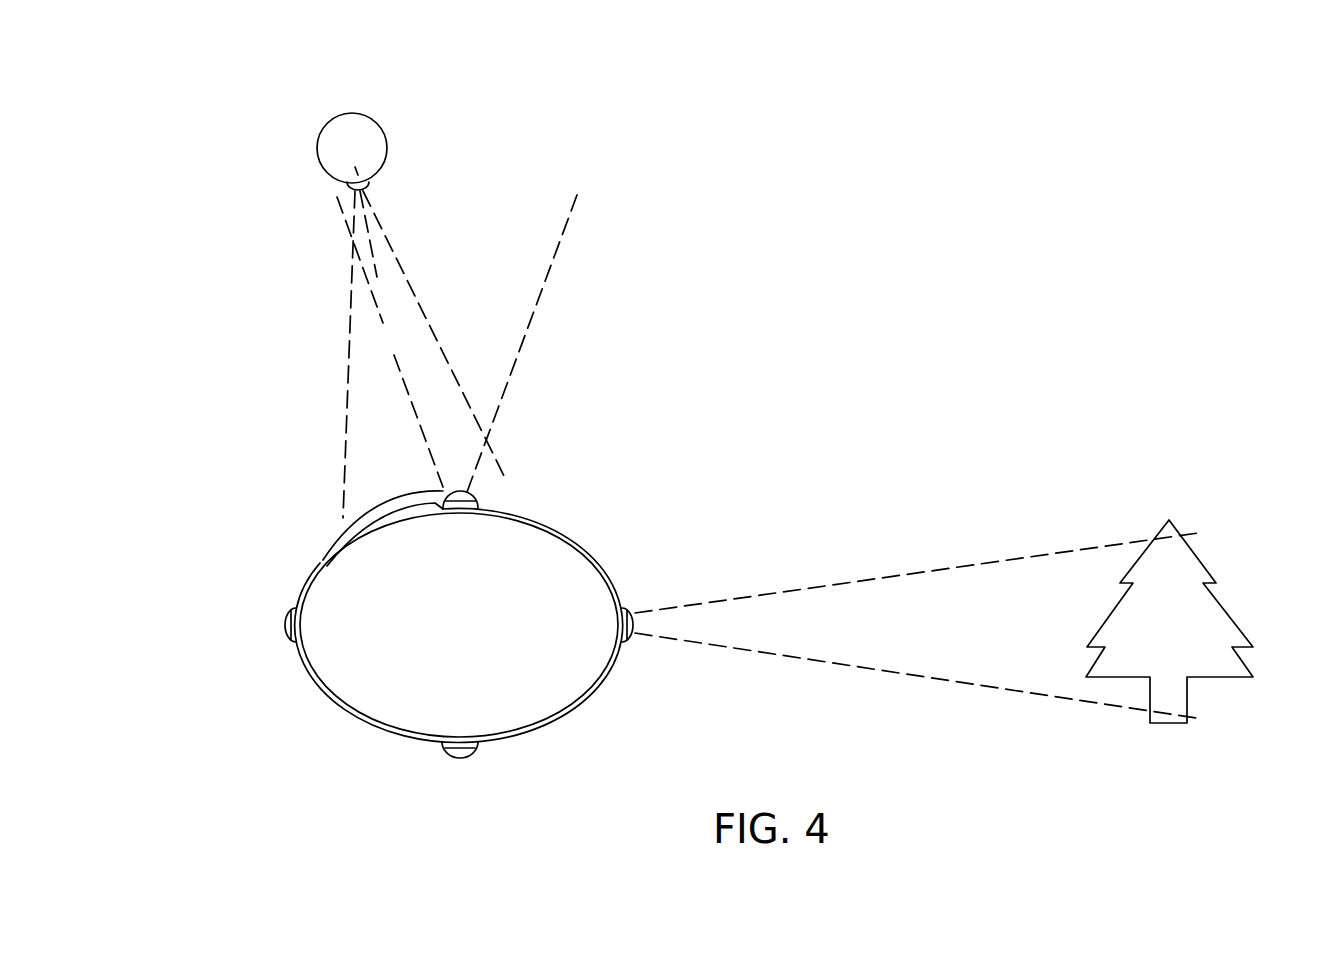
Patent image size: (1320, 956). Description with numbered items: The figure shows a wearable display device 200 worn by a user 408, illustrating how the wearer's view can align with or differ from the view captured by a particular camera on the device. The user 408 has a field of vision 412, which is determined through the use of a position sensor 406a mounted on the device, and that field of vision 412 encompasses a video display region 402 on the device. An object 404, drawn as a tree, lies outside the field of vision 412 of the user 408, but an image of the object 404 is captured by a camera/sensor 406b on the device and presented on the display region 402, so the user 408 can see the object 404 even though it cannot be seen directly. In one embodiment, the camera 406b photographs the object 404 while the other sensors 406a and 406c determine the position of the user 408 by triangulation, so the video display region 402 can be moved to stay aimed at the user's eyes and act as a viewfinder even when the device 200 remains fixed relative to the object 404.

The wearable display device 200 is at (603, 555).
The video display region 402 is at (335, 530).
The object 404 is at (1146, 517).
The position sensor 406a is at (480, 502).
The camera/sensor 406b is at (633, 645).
The sensor 406c is at (280, 627).
The user 408 is at (387, 123).
The field of vision 412 is at (457, 354).